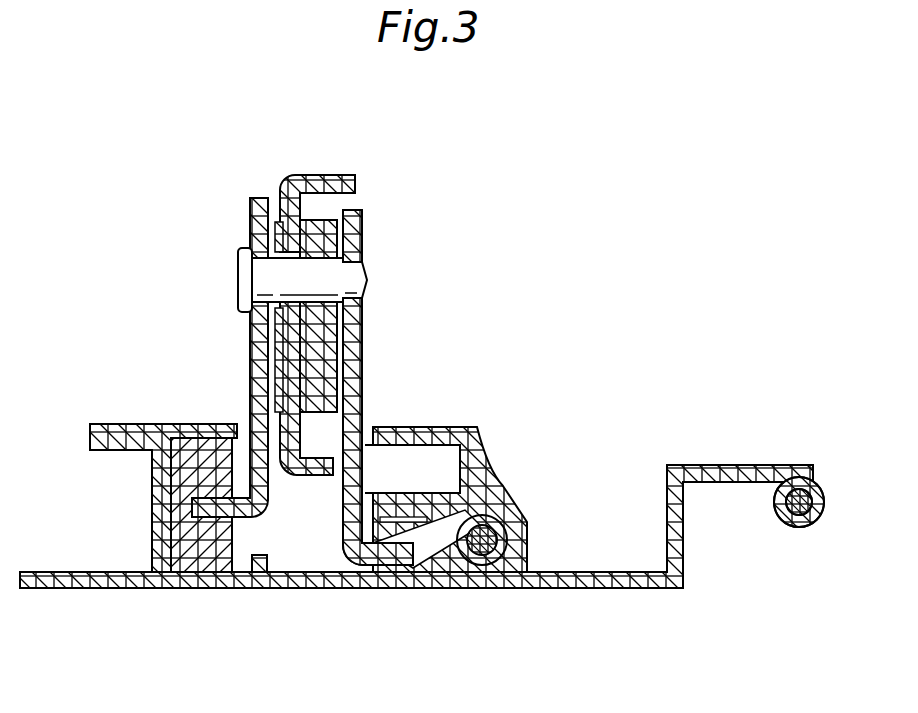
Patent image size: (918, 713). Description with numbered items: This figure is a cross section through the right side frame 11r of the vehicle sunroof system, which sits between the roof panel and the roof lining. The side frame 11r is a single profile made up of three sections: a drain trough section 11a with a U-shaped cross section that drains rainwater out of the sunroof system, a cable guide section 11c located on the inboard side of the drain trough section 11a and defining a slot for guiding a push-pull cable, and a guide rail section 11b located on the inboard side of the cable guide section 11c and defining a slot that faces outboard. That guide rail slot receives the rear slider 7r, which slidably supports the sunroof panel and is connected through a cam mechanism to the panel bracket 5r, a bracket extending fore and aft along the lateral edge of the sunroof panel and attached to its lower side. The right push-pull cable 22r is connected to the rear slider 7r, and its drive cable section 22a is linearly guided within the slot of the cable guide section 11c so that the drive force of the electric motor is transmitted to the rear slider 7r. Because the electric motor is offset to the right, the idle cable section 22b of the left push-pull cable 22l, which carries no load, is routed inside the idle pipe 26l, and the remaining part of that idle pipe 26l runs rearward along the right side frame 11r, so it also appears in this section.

The panel bracket 5r is at (313, 182).
The rear slider 7r is at (250, 362).
The right side frame 11r is at (430, 404).
The drain trough section 11a is at (622, 542).
The guide rail section 11b is at (243, 440).
The cable guide section 11c is at (497, 522).
The right push-pull cable 22r is at (475, 547).
The drive cable section 22a is at (433, 594).
The left push-pull cable 22l is at (800, 515).
The idle cable section 22b is at (807, 571).
The idle pipe 26l is at (777, 505).